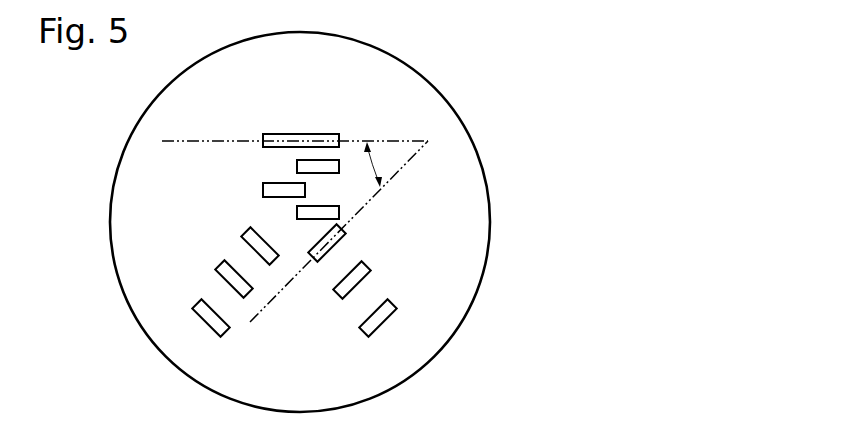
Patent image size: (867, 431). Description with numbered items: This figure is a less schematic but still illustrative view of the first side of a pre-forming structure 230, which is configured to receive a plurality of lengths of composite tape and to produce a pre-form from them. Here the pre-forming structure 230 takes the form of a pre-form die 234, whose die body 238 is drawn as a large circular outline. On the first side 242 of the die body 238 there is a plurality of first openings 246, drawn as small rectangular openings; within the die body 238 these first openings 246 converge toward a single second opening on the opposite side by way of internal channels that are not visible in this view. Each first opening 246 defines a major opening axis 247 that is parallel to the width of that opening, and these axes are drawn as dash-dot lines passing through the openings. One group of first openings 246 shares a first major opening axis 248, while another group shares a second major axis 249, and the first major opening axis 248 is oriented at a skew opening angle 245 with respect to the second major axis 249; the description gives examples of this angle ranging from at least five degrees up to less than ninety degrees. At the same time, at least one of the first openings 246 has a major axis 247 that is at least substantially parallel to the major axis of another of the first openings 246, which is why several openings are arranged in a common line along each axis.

The pre-forming structure 230 is at (545, 63).
The pre-form die 234 is at (515, 118).
The die body 238 is at (111, 223).
The first side 242 is at (160, 320).
The skew opening angle 245 is at (370, 163).
The first openings 246 is at (297, 212).
The major opening axis 247 is at (314, 218).
The first major opening axis 248 is at (397, 140).
The second major axis 249 is at (400, 170).